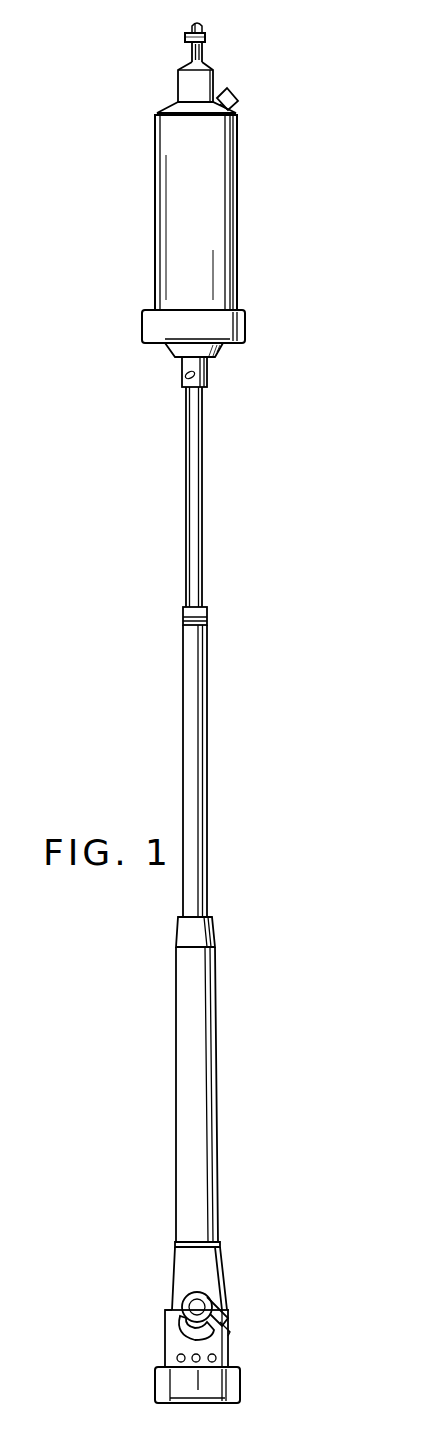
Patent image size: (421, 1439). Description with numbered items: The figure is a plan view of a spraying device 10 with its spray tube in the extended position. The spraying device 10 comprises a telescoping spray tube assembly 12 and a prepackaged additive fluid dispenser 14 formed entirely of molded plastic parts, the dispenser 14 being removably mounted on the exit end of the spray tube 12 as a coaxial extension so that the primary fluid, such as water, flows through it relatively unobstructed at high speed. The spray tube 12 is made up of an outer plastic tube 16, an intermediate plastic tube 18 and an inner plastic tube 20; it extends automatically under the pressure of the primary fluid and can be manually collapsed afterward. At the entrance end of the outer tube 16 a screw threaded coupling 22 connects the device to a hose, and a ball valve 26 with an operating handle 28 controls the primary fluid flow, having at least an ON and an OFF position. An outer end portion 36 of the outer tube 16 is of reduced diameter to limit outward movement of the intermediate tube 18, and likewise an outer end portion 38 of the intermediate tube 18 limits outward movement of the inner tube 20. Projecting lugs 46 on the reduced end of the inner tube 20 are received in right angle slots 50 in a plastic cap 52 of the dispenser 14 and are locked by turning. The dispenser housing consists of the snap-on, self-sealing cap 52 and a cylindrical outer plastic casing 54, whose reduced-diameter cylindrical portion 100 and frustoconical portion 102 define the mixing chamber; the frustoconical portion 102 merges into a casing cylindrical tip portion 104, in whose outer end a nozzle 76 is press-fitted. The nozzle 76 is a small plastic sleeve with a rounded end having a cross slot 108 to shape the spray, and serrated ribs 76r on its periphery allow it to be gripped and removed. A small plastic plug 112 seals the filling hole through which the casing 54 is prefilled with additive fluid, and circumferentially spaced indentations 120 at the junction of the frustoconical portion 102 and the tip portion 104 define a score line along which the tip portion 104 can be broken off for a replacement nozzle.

The spraying device 10 is at (95, 306).
The telescoping spray tube assembly 12 is at (128, 673).
The additive fluid dispenser 14 is at (112, 178).
The outer plastic tube 16 is at (207, 1130).
The intermediate plastic tube 18 is at (208, 827).
The inner plastic tube 20 is at (203, 476).
The screw threaded coupling 22 is at (241, 1390).
The ball valve 26 is at (154, 1331).
The operating handle 28 is at (226, 1310).
The outer end portion of the outer tube 36 is at (216, 931).
The outer end portion of the intermediate tube 38 is at (208, 610).
The projecting lugs 46 is at (184, 375).
The right angle slots 50 is at (208, 376).
The cap 52 is at (246, 325).
The cylindrical outer plastic casing 54 is at (238, 205).
The nozzle 76 is at (206, 37).
The serrated ribs 76r is at (185, 37).
The reduced-diameter cylindrical portion 100 is at (178, 85).
The frustoconical portion 102 is at (179, 65).
The casing cylindrical tip portion 104 is at (192, 49).
The cross slot 108 is at (199, 27).
The plastic plug 112 is at (233, 94).
The indentations 120 is at (203, 55).